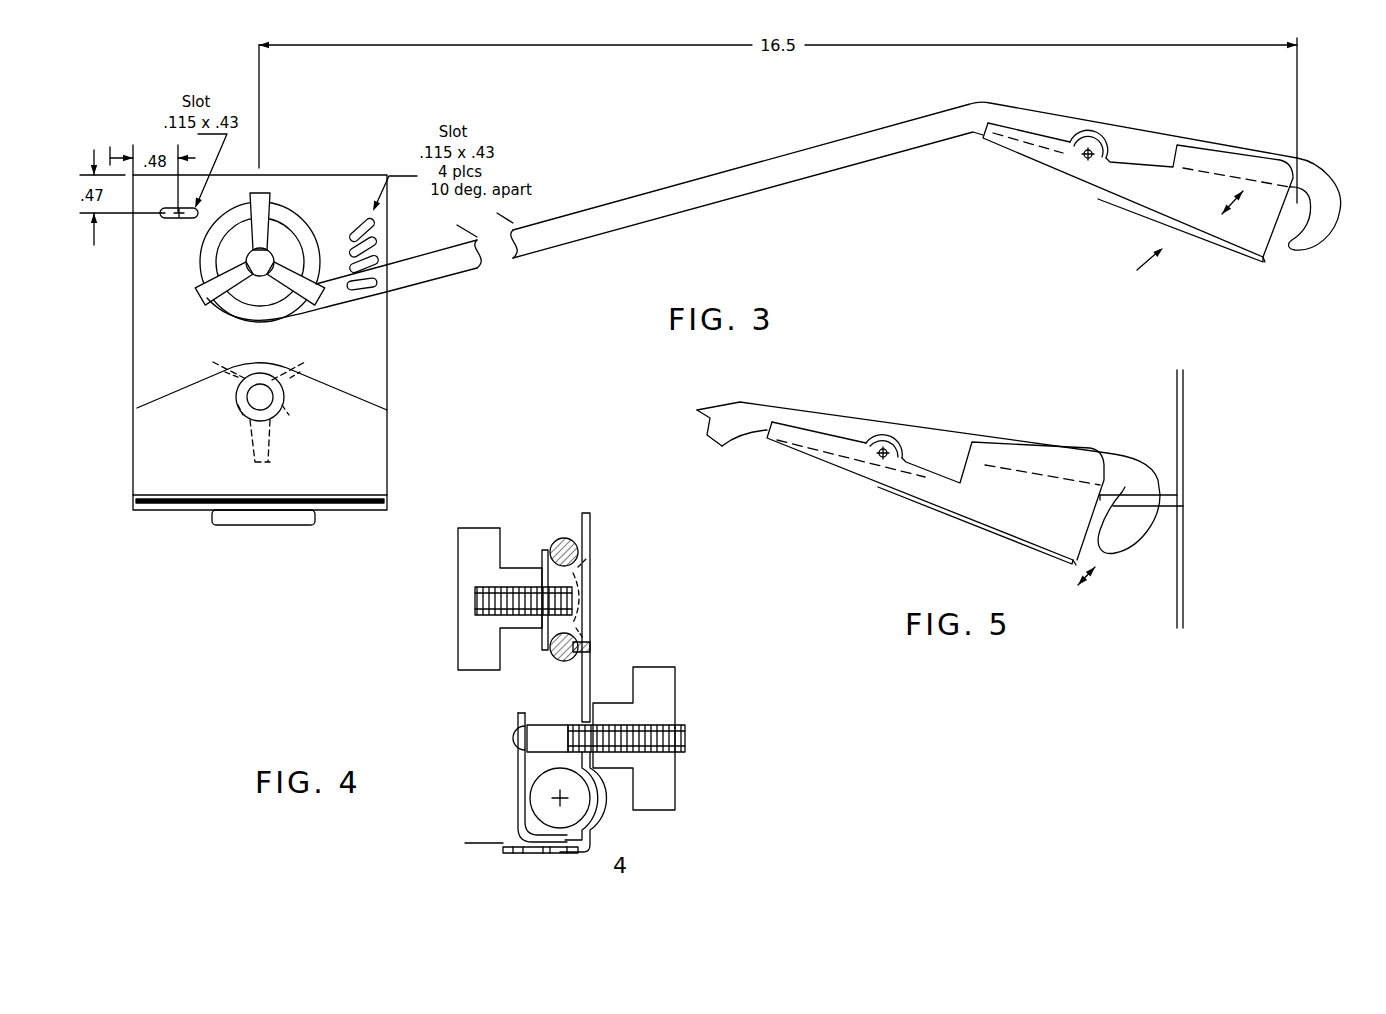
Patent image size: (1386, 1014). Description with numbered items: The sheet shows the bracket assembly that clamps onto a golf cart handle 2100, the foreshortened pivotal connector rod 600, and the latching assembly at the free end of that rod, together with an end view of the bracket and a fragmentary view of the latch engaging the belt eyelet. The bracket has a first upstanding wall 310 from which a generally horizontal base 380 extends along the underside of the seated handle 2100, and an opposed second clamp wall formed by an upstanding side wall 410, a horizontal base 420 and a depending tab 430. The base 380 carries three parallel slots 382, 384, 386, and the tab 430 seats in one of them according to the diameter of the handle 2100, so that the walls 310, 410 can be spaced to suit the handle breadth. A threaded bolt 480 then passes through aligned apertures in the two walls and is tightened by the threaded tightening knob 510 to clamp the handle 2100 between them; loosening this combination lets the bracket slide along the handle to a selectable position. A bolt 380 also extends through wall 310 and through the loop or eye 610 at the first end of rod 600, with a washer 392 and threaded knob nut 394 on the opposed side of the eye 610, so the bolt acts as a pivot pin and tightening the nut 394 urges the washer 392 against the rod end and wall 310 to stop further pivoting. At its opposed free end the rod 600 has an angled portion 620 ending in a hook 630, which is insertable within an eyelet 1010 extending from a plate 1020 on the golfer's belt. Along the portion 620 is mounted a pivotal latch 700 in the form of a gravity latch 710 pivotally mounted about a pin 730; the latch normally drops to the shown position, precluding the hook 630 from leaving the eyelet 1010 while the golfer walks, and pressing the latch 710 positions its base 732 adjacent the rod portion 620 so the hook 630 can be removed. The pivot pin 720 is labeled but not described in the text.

In FIG. 3, the first upstanding wall 310 is at (373, 334).
In FIG. 4, the first upstanding wall 310 is at (598, 655).
In FIG. 3, the upstanding side wall 410 is at (373, 432).
In FIG. 4, the upstanding side wall 410 is at (513, 773).
In FIG. 3, the horizontal base / bolt 380 is at (158, 512).
In FIG. 4, the slot 382 is at (507, 857).
In FIG. 4, the slot 384 is at (538, 857).
In FIG. 4, the slot 386 is at (573, 857).
In FIG. 4, the washer 392 is at (542, 548).
In FIG. 3, the threaded knob nut 394 is at (197, 292).
In FIG. 4, the threaded knob nut 394 is at (460, 652).
In FIG. 3, the horizontal base 420 is at (160, 492).
In FIG. 4, the horizontal base 420 is at (538, 835).
In FIG. 3, the depending tab 430 is at (228, 527).
In FIG. 4, the threaded bolt 480 is at (680, 735).
In FIG. 3, the threaded tightening knob 510 is at (212, 363).
In FIG. 4, the threaded tightening knob 510 is at (667, 685).
In FIG. 3, the rod 600 is at (667, 228).
In FIG. 5, the rod 600 is at (928, 448).
In FIG. 3, the loop/eye 610 is at (283, 207).
In FIG. 4, the loop/eye 610 is at (573, 527).
In FIG. 3, the angled portion 620 is at (1118, 123).
In FIG. 5, the angled portion 620 is at (988, 432).
In FIG. 3, the hook 630 is at (1327, 233).
In FIG. 5, the hook 630 is at (1120, 553).
In FIG. 3, the pivotal latch 700 is at (1157, 272).
In FIG. 3, the gravity latch 710 is at (1248, 238).
In FIG. 5, the gravity latch 710 is at (1047, 525).
In FIG. 3, the pivot 720 is at (1088, 140).
In FIG. 5, the pin 730 is at (880, 470).
In FIG. 3, the base 732 is at (1107, 195).
In FIG. 5, the base 732 is at (893, 493).
In FIG. 5, the eyelet 1010 is at (1160, 493).
In FIG. 5, the plate 1020 is at (1185, 535).
In FIG. 4, the golf cart handle 2100 is at (578, 810).